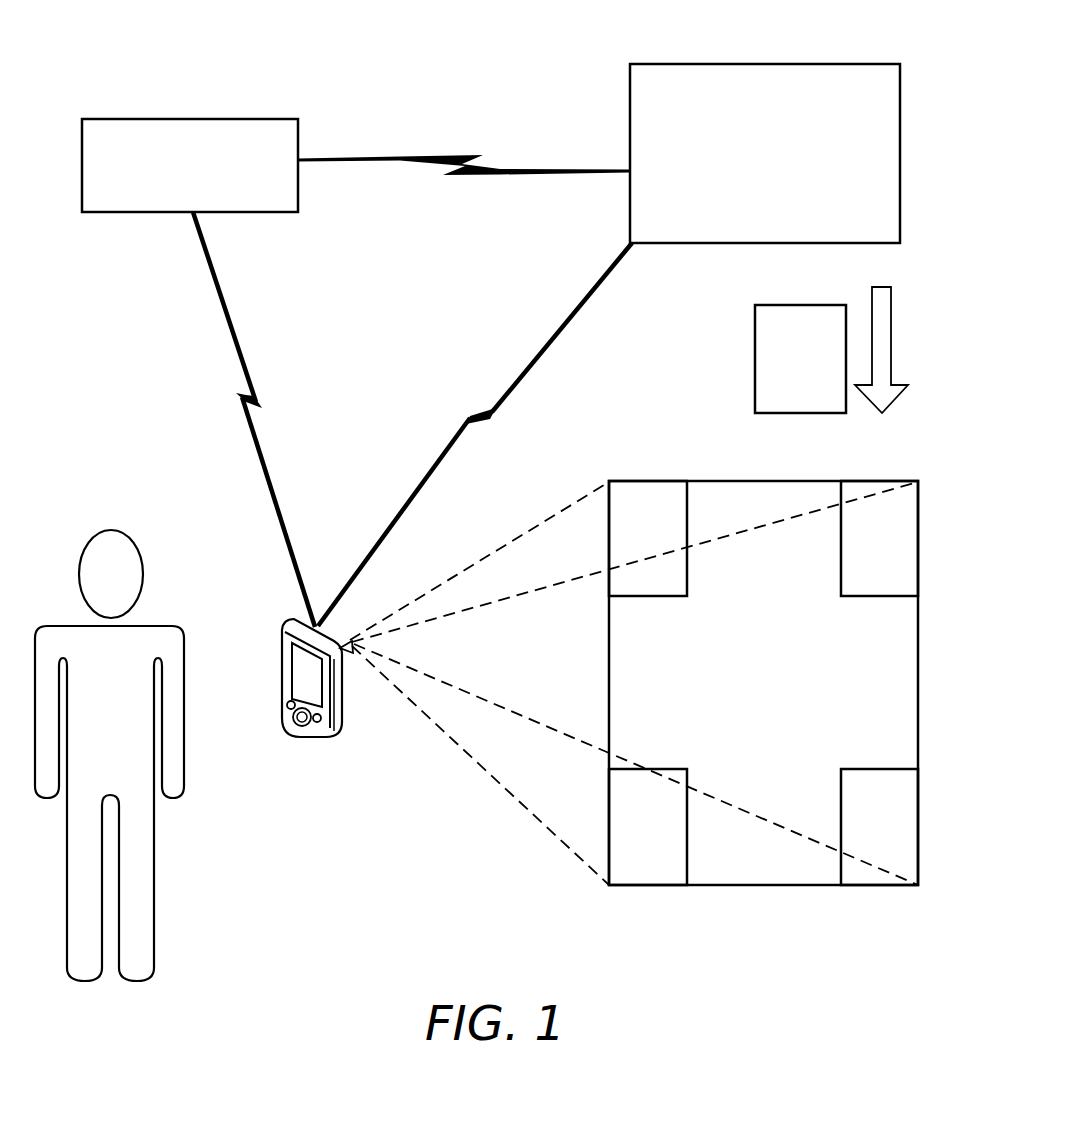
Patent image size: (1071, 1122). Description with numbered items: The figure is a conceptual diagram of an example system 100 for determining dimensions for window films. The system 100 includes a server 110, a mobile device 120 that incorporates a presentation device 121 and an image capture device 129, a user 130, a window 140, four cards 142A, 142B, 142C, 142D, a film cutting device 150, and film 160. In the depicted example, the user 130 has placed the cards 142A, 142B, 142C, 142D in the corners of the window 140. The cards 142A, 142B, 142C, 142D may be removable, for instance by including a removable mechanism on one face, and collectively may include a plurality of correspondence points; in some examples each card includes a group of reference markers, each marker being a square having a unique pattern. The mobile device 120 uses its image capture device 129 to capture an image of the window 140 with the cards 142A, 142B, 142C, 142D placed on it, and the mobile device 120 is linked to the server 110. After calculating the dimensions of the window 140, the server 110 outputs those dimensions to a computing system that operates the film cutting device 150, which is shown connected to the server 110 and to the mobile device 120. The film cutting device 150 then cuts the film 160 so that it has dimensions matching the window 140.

The system 100 is at (292, 34).
The server 110 is at (137, 118).
The mobile device 120 is at (304, 665).
The presentation device 121 is at (303, 679).
The image capture device 129 is at (349, 649).
The user 130 is at (181, 755).
The window 140 is at (744, 710).
The card 142A is at (619, 481).
The card 142B is at (851, 481).
The card 142C is at (665, 769).
The card 142D is at (893, 769).
The film cutting device 150 is at (773, 64).
The film 160 is at (838, 305).